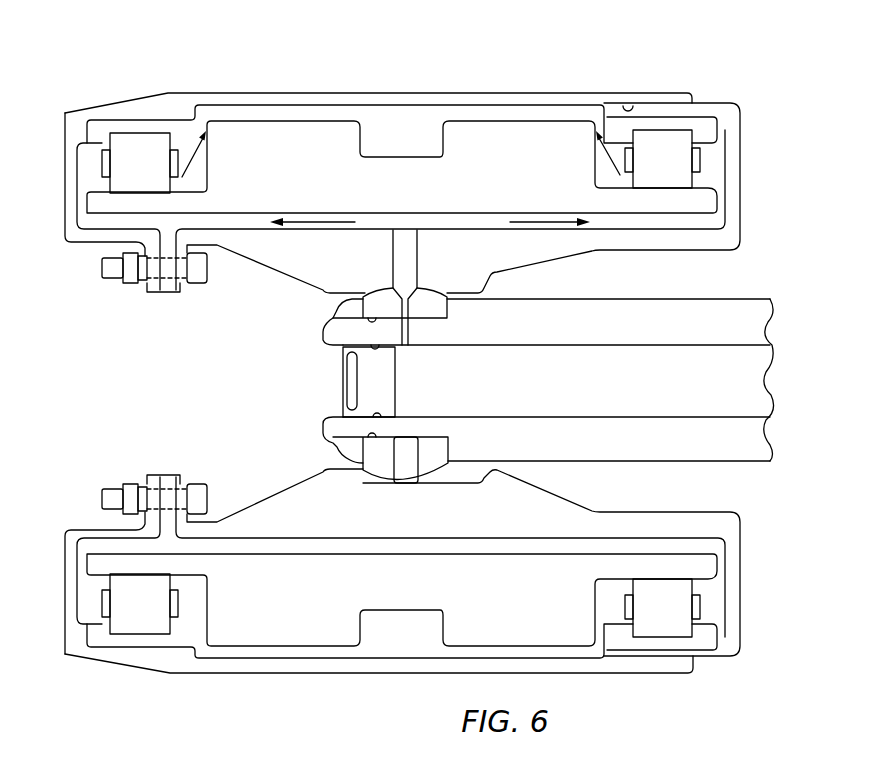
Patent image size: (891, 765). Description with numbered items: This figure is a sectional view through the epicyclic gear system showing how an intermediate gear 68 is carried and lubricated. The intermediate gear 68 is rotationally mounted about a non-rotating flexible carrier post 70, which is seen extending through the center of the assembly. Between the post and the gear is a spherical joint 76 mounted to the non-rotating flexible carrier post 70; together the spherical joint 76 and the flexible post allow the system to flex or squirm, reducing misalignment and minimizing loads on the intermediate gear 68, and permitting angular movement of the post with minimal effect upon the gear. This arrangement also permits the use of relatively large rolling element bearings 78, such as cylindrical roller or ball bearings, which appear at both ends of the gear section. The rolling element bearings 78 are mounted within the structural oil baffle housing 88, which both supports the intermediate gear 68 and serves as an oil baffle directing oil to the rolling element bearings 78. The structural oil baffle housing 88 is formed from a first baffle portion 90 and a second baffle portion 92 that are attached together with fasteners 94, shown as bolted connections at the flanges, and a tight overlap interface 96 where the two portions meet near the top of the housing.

The intermediate gear 68 is at (413, 194).
The non-rotating flexible carrier post 70 is at (720, 308).
The spherical joint 76 is at (380, 457).
The rolling element bearing 78 is at (128, 170).
The structural oil baffle housing 88 is at (433, 94).
The first baffle portion 90 is at (150, 112).
The second baffle portion 92 is at (728, 123).
The fastener 94 is at (123, 283).
The tight overlap interface 96 is at (633, 103).